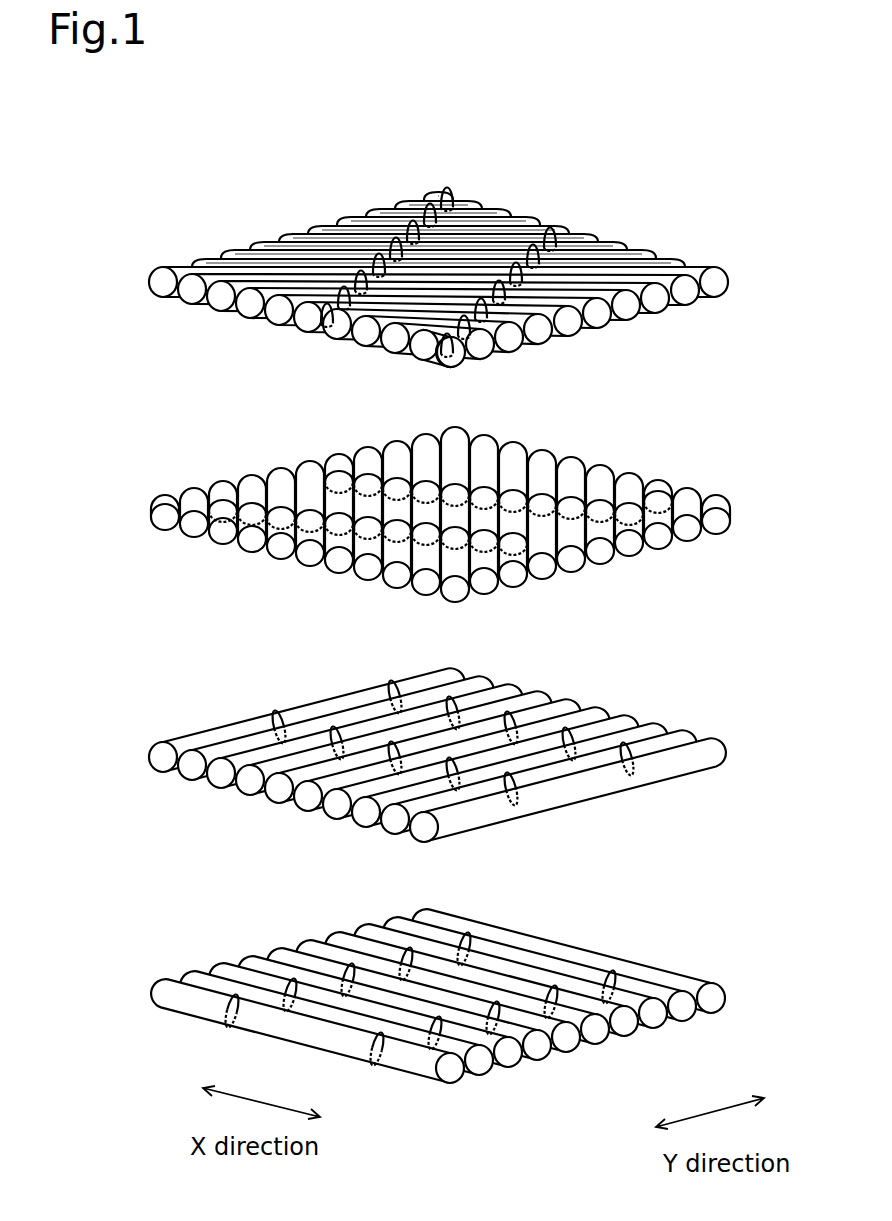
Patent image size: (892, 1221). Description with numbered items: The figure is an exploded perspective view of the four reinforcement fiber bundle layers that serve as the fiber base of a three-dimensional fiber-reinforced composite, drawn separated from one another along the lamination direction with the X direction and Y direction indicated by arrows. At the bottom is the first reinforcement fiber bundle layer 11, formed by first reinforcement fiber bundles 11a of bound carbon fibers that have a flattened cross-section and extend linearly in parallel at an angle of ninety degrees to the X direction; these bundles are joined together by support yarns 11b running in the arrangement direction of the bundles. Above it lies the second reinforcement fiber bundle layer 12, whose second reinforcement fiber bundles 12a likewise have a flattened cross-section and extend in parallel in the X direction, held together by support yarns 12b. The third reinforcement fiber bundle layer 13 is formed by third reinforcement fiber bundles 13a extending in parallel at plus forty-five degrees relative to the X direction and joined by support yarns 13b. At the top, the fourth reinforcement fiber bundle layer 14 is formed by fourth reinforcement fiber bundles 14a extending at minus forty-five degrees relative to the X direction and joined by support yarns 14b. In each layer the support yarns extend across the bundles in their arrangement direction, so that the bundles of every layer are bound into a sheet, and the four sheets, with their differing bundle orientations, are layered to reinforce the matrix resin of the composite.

The first reinforcement fiber bundle layer 11 is at (472, 992).
The first reinforcement fiber bundles 11a is at (713, 1005).
The support yarns 11b is at (590, 966).
The second reinforcement fiber bundle layer 12 is at (471, 755).
The second reinforcement fiber bundles 12a is at (690, 759).
The support yarns 12b is at (630, 734).
The third reinforcement fiber bundle layer 13 is at (475, 514).
The third reinforcement fiber bundles 13a is at (714, 533).
The support yarns 13b is at (652, 486).
The fourth reinforcement fiber bundle layer 14 is at (472, 270).
The fourth reinforcement fiber bundles 14a is at (683, 292).
The support yarns 14b is at (552, 235).